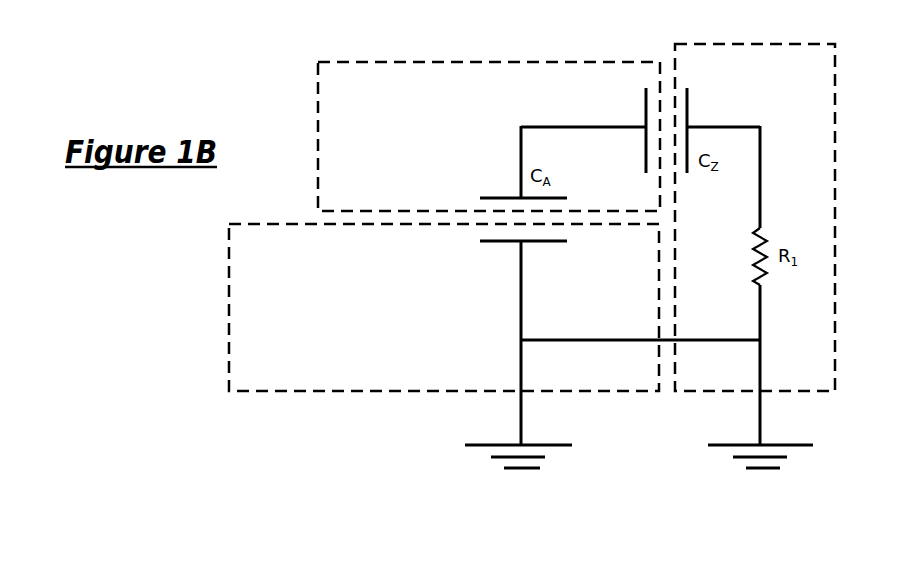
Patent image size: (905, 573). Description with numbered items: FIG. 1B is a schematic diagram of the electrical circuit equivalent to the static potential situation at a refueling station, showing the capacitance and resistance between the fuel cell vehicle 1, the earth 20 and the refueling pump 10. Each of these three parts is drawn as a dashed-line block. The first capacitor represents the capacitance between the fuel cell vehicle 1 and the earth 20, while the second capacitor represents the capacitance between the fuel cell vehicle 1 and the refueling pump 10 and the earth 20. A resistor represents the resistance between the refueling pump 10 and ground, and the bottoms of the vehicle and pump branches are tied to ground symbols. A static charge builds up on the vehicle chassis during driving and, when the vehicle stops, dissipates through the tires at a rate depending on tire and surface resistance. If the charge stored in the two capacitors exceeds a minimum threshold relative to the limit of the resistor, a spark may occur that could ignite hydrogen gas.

The fuel cell vehicle 1 is at (317, 138).
The refueling pump 10 is at (812, 172).
The earth 20 is at (230, 391).